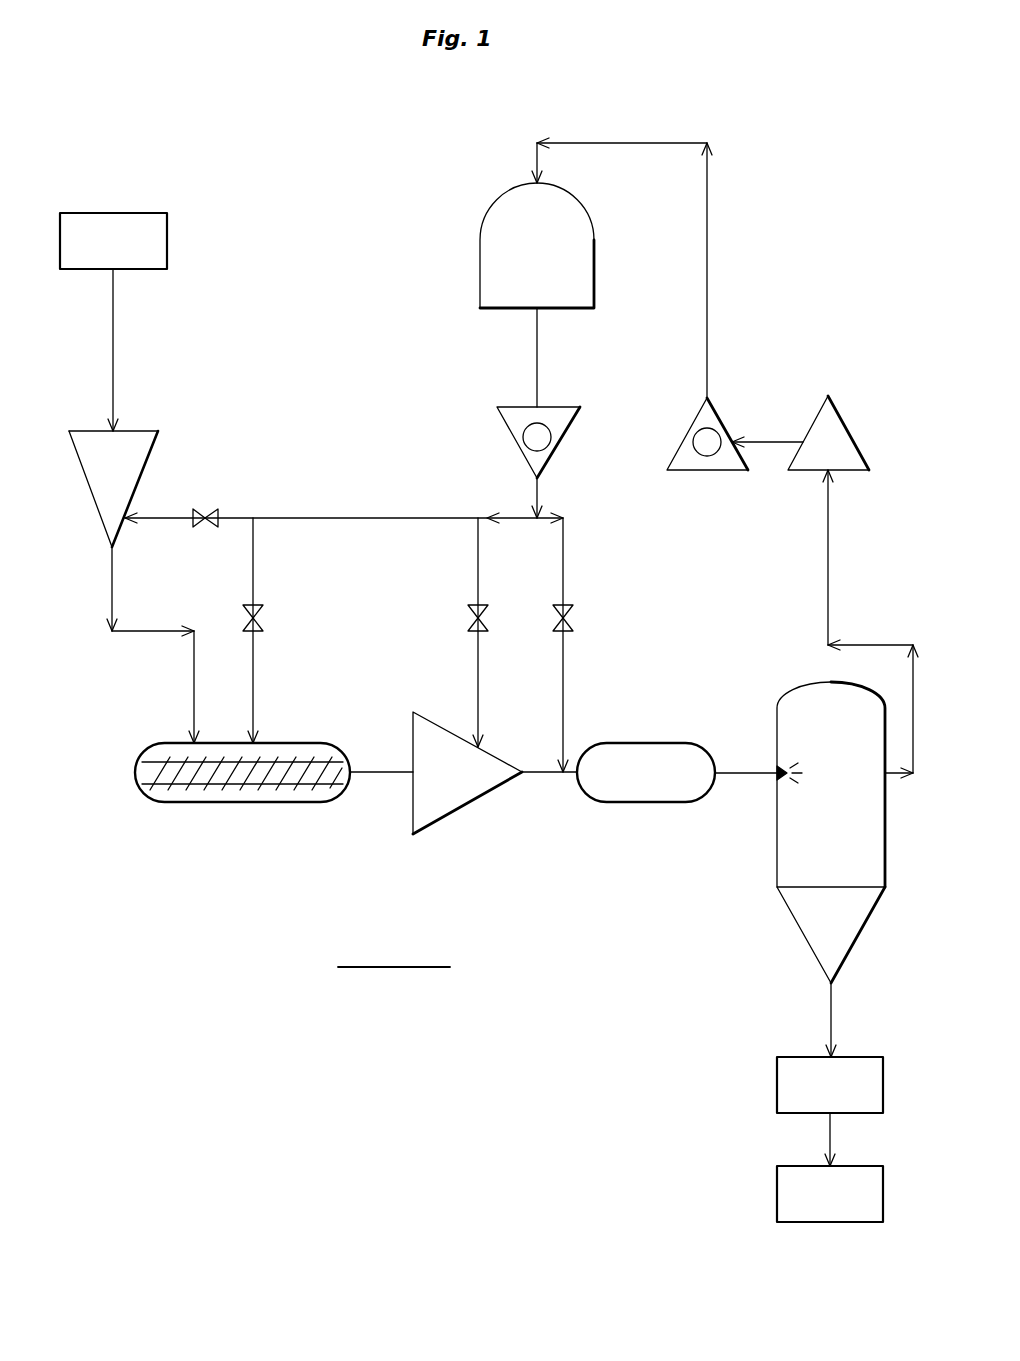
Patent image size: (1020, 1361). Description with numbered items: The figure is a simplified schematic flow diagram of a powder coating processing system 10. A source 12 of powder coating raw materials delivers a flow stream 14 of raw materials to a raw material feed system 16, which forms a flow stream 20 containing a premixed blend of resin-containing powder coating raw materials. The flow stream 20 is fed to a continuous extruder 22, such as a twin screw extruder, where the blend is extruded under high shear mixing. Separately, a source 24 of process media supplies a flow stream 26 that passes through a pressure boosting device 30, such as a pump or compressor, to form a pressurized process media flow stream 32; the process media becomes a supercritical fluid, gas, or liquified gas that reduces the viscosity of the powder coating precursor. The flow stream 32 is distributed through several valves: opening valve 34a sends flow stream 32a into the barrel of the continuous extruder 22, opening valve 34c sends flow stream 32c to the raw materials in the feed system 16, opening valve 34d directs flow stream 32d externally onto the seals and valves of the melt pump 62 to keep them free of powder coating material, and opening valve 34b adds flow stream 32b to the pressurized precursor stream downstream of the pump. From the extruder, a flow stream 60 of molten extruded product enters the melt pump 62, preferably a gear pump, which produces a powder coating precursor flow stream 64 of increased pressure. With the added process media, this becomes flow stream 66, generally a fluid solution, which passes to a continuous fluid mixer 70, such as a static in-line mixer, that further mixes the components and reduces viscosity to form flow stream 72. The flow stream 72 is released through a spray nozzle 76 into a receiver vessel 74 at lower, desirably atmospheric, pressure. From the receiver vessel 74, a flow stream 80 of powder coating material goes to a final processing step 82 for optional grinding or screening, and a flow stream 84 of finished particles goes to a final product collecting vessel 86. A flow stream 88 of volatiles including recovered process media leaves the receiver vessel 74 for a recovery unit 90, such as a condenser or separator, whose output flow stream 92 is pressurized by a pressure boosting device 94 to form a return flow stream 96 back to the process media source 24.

The powder coating processing system 10 is at (400, 967).
The source of powder coating raw materials 12 is at (100, 255).
The flow stream of raw materials 14 is at (113, 328).
The raw material feed system 16 is at (158, 431).
The flow stream of premixed blend 20 is at (150, 633).
The continuous extruder 22 is at (245, 803).
The source of process media 24 is at (594, 250).
The flow stream of process media 26 is at (537, 362).
The pressure boosting device 30 is at (505, 435).
The process media flow stream 32 is at (537, 490).
The process media flow stream to extruder 32a is at (253, 697).
The process media flow stream to precursor stream 32b is at (563, 697).
The process media flow stream to feed system 32c is at (158, 518).
The process media flow stream to melt pump seals 32d is at (478, 697).
The valve 34a is at (262, 620).
The valve 34b is at (573, 620).
The valve 34c is at (205, 507).
The valve 34d is at (469, 620).
The flow stream of extruded product 60 is at (376, 773).
The melt pump 62 is at (438, 785).
The powder coating precursor flow stream of increased pressure 64 is at (535, 773).
The powder coating precursor flow stream containing additional process media 66 is at (567, 773).
The continuous fluid mixer 70 is at (652, 803).
The flow stream to receiver vessel 72 is at (733, 774).
The receiver vessel 74 is at (846, 830).
The spray nozzle 76 is at (790, 766).
The flow stream of powder coating material 80 is at (831, 1015).
The final processing step 82 is at (816, 1098).
The flow stream of finished powder coating particles 84 is at (830, 1140).
The final product collecting vessel 86 is at (816, 1207).
The flow stream of volatiles 88 is at (878, 645).
The recovery unit 90 is at (800, 471).
The flow stream of recovered process media 92 is at (762, 442).
The pressure boosting device 94 is at (690, 437).
The flow stream for return 96 is at (707, 300).